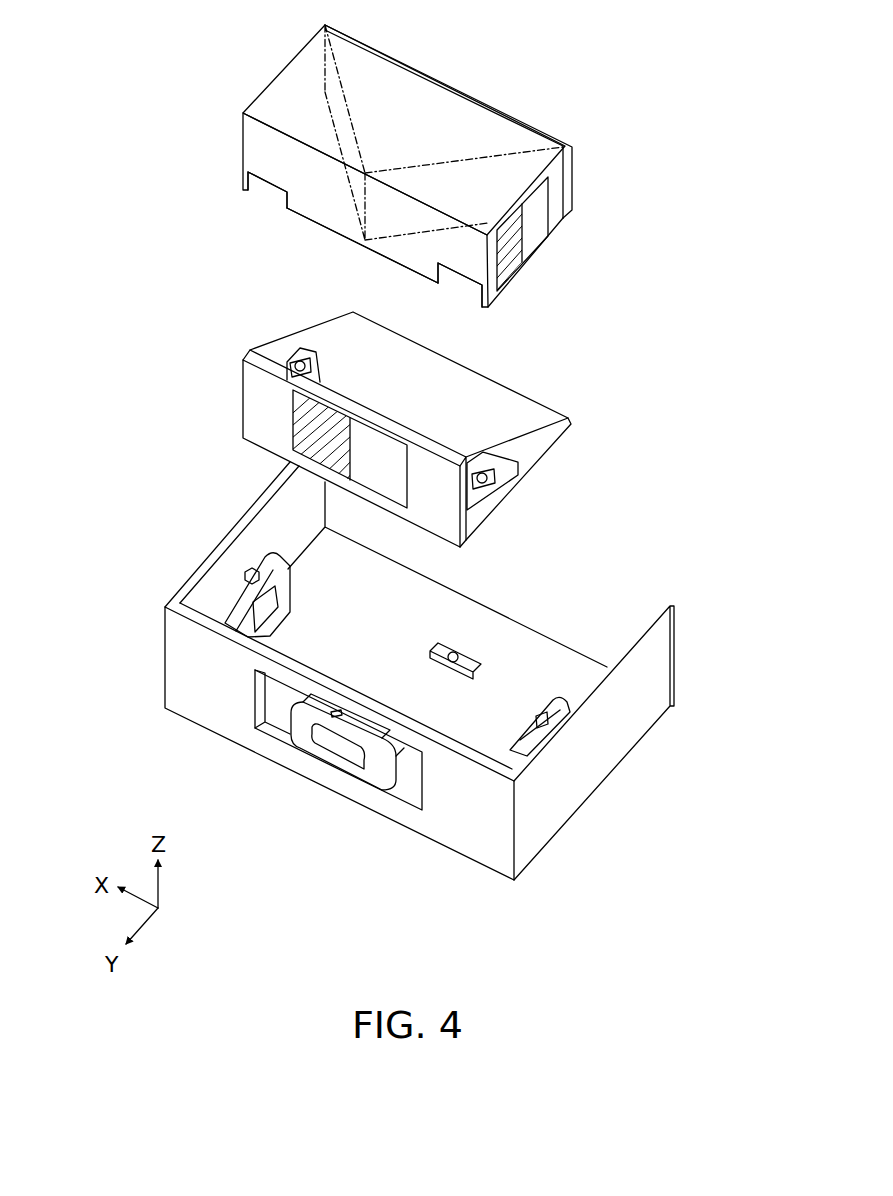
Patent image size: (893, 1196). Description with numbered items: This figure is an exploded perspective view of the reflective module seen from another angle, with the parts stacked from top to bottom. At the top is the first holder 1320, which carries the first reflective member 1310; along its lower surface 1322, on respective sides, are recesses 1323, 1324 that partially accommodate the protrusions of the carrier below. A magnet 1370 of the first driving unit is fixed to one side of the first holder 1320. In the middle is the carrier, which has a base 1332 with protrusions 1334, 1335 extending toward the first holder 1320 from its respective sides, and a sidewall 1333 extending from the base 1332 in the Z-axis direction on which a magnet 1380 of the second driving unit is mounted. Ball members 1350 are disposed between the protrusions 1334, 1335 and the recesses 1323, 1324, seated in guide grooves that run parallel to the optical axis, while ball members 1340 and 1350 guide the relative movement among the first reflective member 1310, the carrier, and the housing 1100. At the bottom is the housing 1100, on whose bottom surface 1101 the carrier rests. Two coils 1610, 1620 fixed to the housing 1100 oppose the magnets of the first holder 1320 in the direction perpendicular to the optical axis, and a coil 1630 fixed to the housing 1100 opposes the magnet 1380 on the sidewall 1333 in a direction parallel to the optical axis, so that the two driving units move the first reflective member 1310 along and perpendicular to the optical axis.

The housing 1100 is at (440, 671).
The bottom surface 1101 is at (466, 611).
The first reflective member 1310 is at (385, 164).
The first holder 1320 is at (253, 145).
The lower surface 1322 is at (322, 232).
The recess 1323 is at (266, 188).
The recess 1324 is at (458, 284).
The base 1332 is at (515, 405).
The sidewall 1333 is at (308, 448).
The protrusion 1334 is at (547, 489).
The protrusion 1335 is at (308, 353).
The ball member 1340 is at (458, 656).
The ball member 1350 is at (500, 481).
The magnet 1370 is at (515, 248).
The magnet 1380 is at (297, 447).
The coil 1610 is at (243, 592).
The coil 1620 is at (554, 738).
The coil 1630 is at (306, 732).